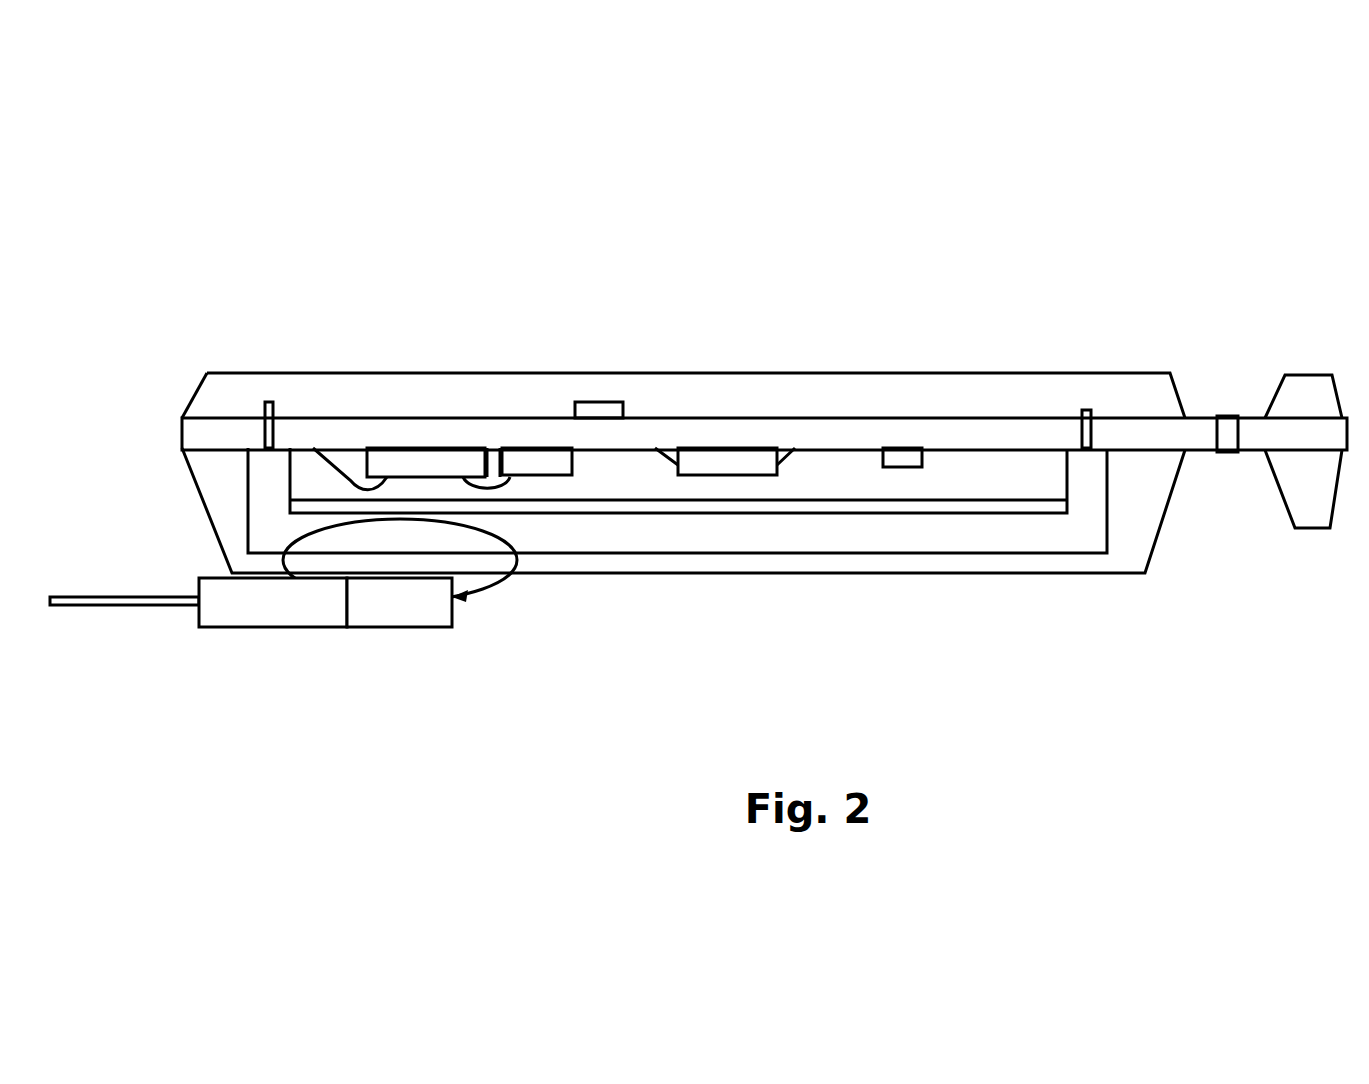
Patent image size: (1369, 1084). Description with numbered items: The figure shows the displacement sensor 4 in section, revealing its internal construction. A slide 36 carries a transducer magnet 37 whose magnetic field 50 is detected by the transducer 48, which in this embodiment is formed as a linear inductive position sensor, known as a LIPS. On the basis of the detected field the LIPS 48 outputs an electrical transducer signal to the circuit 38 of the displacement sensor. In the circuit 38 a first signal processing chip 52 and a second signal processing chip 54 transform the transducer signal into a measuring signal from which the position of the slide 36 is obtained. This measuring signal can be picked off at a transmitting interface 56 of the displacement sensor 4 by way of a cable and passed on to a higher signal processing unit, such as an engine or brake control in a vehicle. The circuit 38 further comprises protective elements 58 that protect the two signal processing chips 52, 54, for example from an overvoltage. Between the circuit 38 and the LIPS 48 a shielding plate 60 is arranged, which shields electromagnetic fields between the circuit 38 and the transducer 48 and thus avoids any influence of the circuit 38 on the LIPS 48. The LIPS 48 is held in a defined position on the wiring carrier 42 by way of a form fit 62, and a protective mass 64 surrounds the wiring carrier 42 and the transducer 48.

The displacement sensor 4 is at (238, 285).
The slide 36 is at (263, 608).
The transducer magnet 37 is at (397, 608).
The circuit 38 is at (646, 476).
The wiring carrier 42 is at (470, 432).
The transducer 48 is at (833, 540).
The magnetic field 50 is at (493, 588).
The first signal processing chip 52 is at (410, 460).
The second signal processing chip 54 is at (538, 462).
The transmitting interface 56 is at (1226, 432).
The protective elements 58 is at (600, 410).
The shielding plate 60 is at (892, 508).
The form fit 62 is at (273, 410).
The protective mass 64 is at (983, 472).